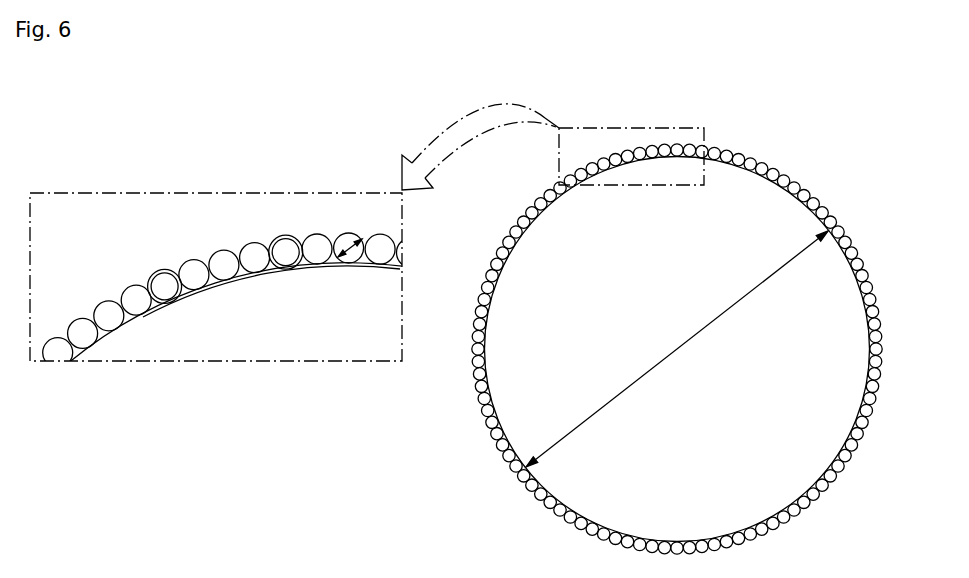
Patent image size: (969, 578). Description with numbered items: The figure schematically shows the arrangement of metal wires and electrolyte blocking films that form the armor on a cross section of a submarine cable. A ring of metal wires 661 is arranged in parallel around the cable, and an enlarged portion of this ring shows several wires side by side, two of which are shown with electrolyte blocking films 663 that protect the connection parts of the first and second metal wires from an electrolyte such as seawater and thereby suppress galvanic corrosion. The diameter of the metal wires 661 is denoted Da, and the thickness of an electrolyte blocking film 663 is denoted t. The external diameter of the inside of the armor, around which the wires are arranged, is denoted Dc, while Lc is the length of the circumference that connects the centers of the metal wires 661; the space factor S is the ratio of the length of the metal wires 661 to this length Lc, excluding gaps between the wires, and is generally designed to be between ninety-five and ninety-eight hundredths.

The metal wires 661 is at (225, 262).
The electrolyte blocking films 663 is at (280, 236).
The diameter of metal wires Da is at (347, 240).
The thickness of an electrolyte blocking film t is at (291, 259).
The length of a circumference Lc is at (722, 148).
The external diameter of the inside of an armor Dc is at (677, 349).